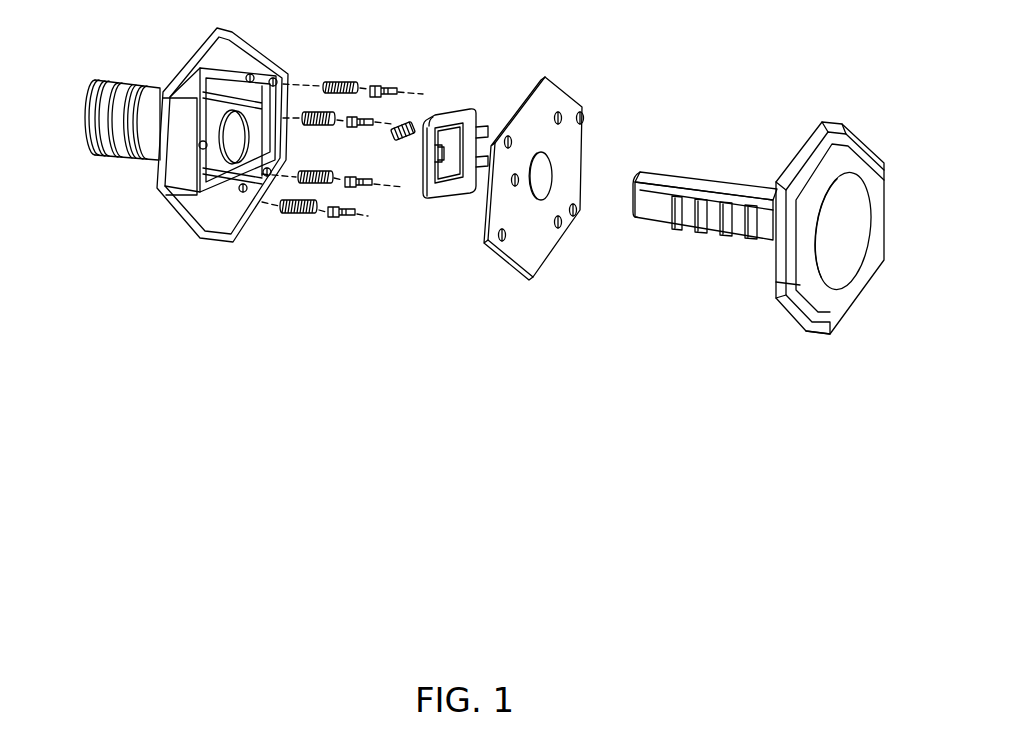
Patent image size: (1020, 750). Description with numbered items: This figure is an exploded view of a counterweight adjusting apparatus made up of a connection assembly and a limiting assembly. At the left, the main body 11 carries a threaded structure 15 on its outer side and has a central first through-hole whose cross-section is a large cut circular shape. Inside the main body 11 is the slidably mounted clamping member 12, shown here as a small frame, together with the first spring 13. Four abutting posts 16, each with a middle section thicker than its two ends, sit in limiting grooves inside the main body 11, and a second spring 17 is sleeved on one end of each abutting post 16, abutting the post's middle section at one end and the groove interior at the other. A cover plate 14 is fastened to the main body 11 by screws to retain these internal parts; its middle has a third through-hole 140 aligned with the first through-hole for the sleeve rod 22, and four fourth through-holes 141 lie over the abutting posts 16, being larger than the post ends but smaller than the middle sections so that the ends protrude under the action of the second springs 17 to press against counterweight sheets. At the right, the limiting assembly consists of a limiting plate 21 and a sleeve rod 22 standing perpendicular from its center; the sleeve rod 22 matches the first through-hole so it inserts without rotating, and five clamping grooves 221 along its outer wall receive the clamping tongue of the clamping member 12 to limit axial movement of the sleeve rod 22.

The main body 11 is at (185, 227).
The clamping member 12 is at (433, 198).
The first spring 13 is at (409, 121).
The cover plate 14 is at (554, 185).
The threaded structure 15 is at (102, 157).
The abutting post 16 is at (343, 216).
The second spring 17 is at (300, 215).
The limiting plate 21 is at (795, 331).
The sleeve rod 22 is at (705, 214).
The third through-hole 140 is at (552, 175).
The fourth through-hole 141 is at (581, 102).
The clamping groove 221 is at (722, 196).